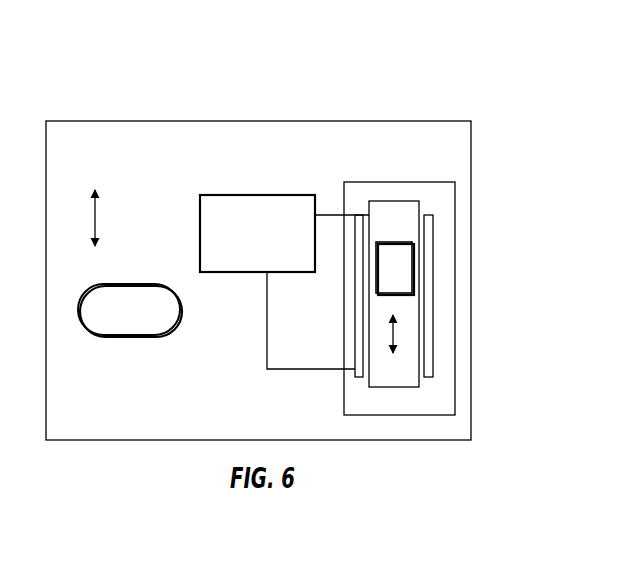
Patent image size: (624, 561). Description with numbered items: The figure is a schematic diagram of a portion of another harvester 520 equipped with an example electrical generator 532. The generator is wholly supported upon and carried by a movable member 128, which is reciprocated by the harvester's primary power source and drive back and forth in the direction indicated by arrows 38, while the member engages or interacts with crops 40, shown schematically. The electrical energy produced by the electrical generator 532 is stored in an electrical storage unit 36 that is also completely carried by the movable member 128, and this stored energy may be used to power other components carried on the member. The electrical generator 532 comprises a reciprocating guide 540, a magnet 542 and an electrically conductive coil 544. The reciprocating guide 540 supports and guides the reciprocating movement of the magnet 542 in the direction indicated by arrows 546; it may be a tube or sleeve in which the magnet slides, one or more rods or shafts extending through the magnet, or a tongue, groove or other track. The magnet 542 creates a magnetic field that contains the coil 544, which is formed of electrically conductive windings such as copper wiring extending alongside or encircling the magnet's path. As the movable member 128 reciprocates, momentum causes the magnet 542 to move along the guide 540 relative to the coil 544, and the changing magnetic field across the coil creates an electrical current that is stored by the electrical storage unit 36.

The harvester 520 is at (73, 73).
The movable member 128 is at (293, 121).
The arrows 38 is at (96, 222).
The electrical storage unit 36 is at (225, 195).
The crops 40 is at (128, 337).
The electrical generator 532 is at (412, 182).
The reciprocating guide 540 is at (415, 201).
The magnet 542 is at (403, 242).
The electrically conductive coil 544 is at (359, 307).
The arrows 546 is at (395, 330).